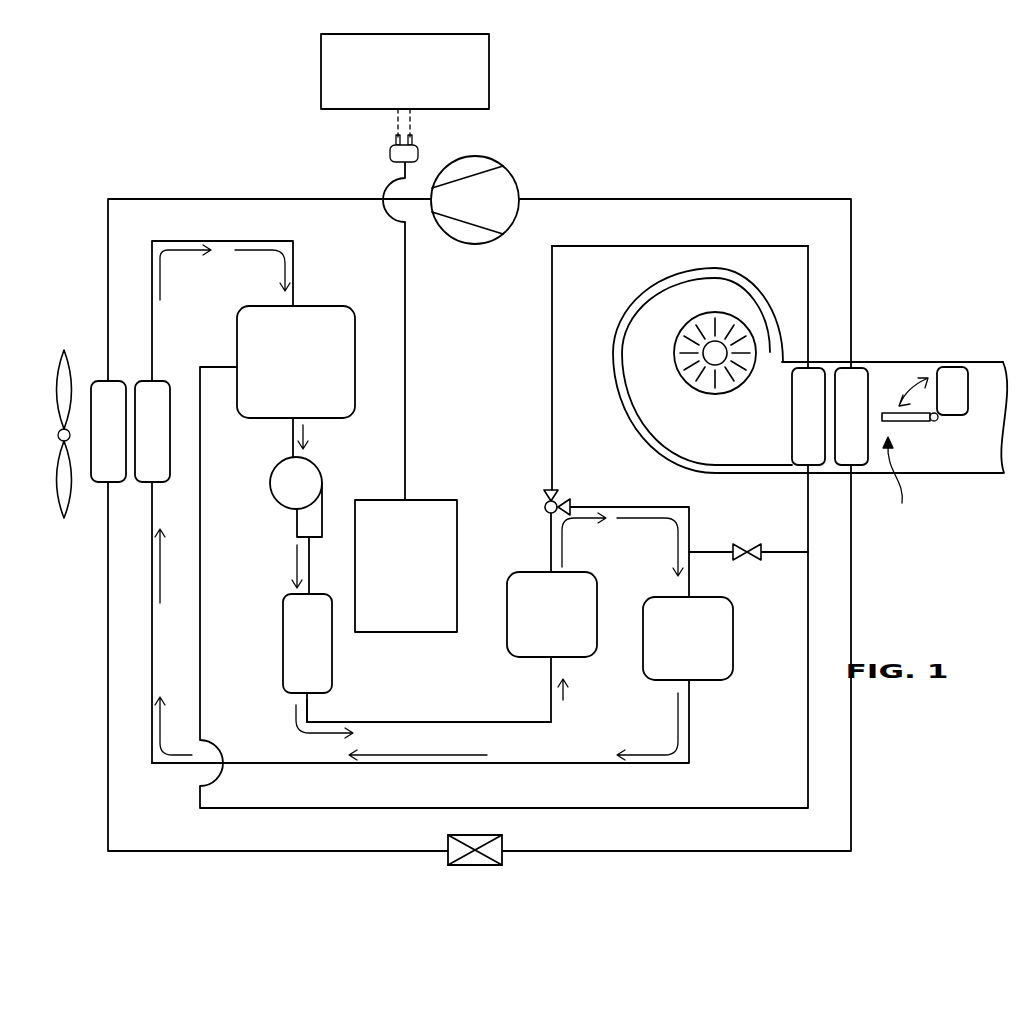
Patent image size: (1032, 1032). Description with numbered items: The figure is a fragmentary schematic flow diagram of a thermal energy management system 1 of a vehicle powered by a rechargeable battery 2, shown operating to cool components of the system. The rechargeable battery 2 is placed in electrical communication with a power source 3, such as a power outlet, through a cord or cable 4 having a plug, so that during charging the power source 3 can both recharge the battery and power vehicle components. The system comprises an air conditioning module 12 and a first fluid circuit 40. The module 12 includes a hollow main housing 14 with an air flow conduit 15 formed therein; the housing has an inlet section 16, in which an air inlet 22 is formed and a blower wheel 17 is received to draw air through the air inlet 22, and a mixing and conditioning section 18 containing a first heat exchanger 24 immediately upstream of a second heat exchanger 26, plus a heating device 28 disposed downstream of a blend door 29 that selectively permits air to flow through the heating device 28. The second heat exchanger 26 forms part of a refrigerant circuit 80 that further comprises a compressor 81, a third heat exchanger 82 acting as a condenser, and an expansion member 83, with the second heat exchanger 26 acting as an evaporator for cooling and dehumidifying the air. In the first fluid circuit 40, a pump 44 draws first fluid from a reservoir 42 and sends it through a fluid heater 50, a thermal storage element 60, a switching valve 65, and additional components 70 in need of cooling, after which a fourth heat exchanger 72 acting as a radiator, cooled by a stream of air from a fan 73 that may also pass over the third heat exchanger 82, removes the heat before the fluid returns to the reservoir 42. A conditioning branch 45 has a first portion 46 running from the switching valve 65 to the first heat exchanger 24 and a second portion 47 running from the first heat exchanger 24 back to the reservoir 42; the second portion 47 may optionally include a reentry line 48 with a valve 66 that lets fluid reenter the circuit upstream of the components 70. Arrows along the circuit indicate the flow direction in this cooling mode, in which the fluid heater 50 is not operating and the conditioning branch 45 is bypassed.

The thermal energy management system 1 is at (509, 476).
The rechargeable battery 2 is at (399, 579).
The power source 3 is at (399, 84).
The cord or cable 4 is at (405, 308).
The air conditioning module 12 is at (933, 355).
The main housing 14 is at (883, 362).
The air flow conduit 15 is at (704, 440).
The inlet section 16 is at (640, 368).
The blower wheel 17 is at (680, 337).
The mixing and conditioning section 18 is at (898, 480).
The air inlet 22 is at (762, 345).
The first heat exchanger 24 is at (797, 429).
The second heat exchanger 26 is at (840, 429).
The heating device 28 is at (941, 401).
The blend door 29 is at (892, 422).
The first fluid circuit 40 is at (403, 719).
The reservoir 42 is at (282, 377).
The pump 44 is at (287, 495).
The conditioning branch 45 is at (548, 318).
The first portion 46 is at (551, 418).
The second portion 47 is at (808, 702).
The reentry line 48 is at (780, 546).
The fluid heater 50 is at (296, 655).
The thermal storage element 60 is at (540, 626).
The switching valve 65 is at (560, 500).
The valve 66 is at (760, 560).
The additional components 70 is at (677, 650).
The fourth heat exchanger 72 is at (141, 444).
The fan 73 is at (63, 373).
The refrigerant circuit 80 is at (250, 199).
The compressor 81 is at (464, 212).
The third heat exchanger 82 is at (98, 444).
The expansion member 83 is at (472, 868).